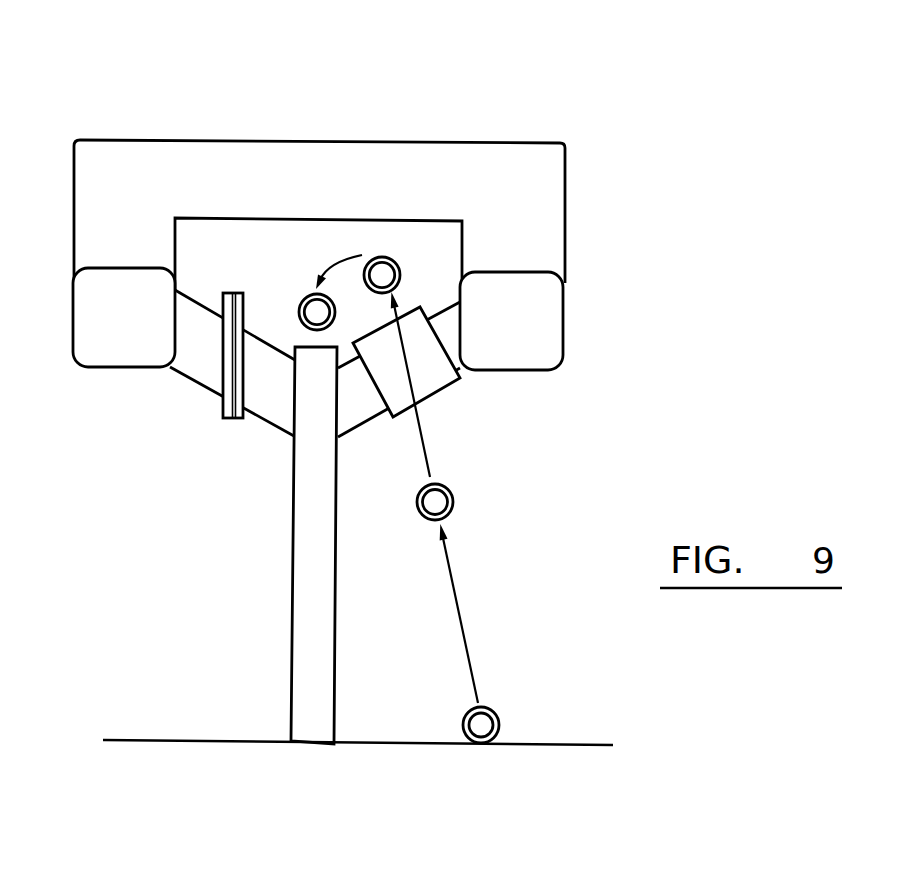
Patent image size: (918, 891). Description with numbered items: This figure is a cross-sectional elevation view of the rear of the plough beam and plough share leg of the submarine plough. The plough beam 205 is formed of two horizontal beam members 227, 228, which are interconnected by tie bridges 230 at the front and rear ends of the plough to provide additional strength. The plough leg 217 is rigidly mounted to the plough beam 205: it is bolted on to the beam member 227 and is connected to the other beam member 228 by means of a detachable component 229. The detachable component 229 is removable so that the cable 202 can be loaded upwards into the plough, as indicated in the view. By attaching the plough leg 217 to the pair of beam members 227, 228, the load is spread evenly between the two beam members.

The tie bridge 230 is at (310, 173).
The plough beam 205 is at (590, 208).
The beam member 227 is at (118, 367).
The beam member 228 is at (530, 372).
The detachable component 229 is at (413, 373).
The plough leg 217 is at (312, 555).
The cable 202 is at (493, 708).